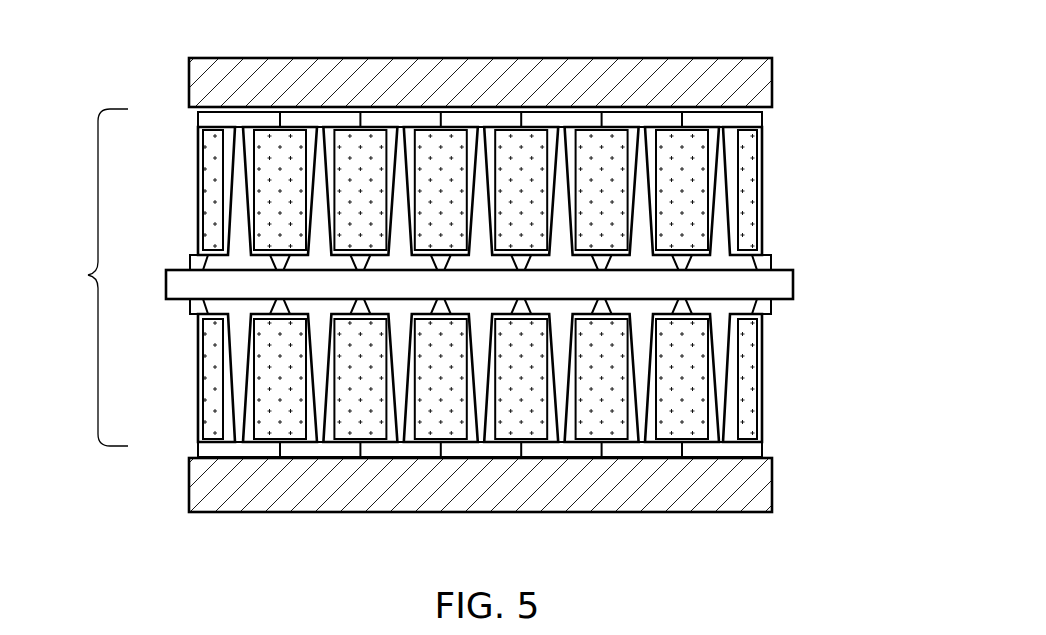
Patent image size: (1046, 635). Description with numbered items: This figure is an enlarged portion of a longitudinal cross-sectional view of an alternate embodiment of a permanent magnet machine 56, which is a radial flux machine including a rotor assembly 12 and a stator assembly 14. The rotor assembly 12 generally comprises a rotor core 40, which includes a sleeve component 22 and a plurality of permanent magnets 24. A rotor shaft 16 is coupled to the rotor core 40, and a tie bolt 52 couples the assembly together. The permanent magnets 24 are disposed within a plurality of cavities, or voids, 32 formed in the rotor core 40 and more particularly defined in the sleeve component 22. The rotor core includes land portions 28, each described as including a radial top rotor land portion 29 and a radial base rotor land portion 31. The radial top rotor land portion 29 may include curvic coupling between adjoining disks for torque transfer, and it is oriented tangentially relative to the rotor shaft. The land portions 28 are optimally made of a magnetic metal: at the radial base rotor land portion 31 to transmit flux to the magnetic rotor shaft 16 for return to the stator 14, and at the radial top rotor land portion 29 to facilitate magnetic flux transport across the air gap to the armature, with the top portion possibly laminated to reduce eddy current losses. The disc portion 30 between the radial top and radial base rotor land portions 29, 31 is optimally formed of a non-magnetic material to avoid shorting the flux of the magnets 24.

The rotor assembly 12 is at (800, 210).
The stator assembly 14 is at (723, 70).
The rotor shaft 16 is at (190, 257).
The sleeve component 22 is at (642, 117).
The permanent magnets 24 is at (692, 187).
The land portions 28 is at (475, 117).
The radial top rotor land portion 29 is at (558, 117).
The disc portion 30 is at (399, 368).
The radial base rotor land portion 31 is at (193, 310).
The cavities 32 is at (386, 127).
The rotor core 40 is at (88, 275).
The tie bolt 52 is at (780, 283).
The permanent magnet machine 56 is at (128, 86).